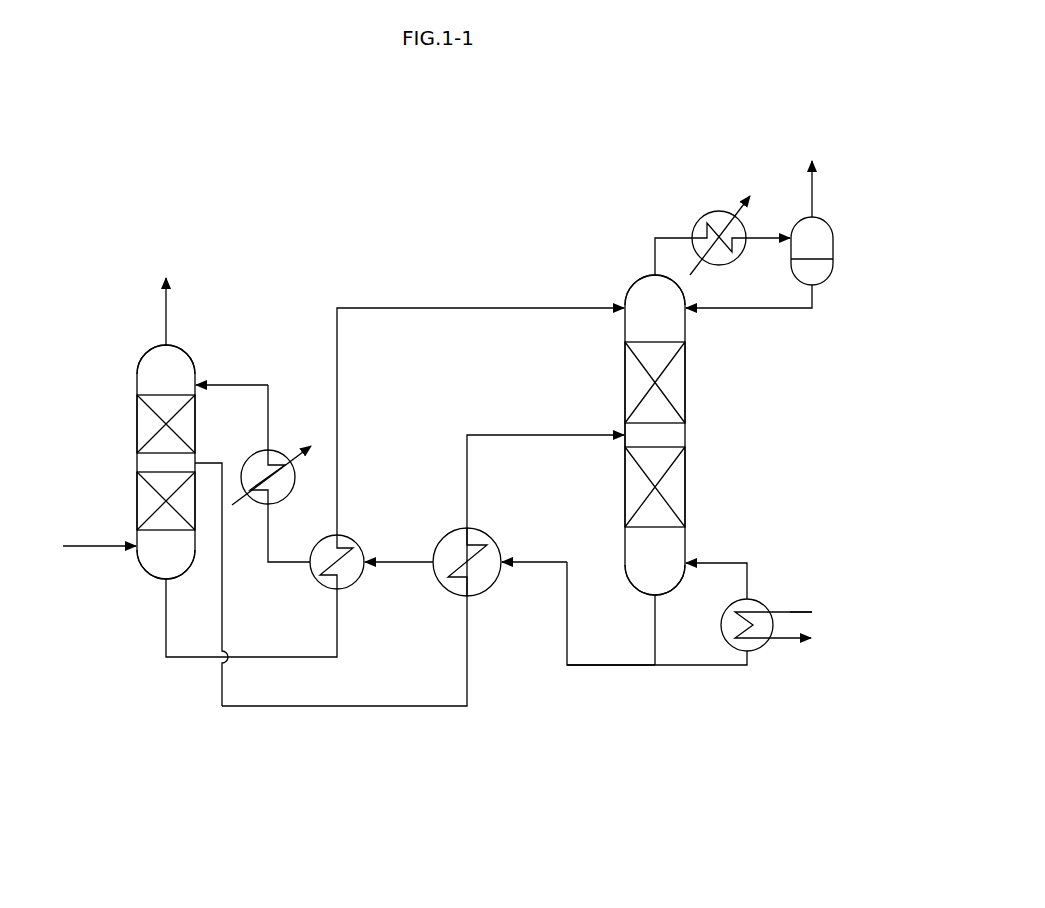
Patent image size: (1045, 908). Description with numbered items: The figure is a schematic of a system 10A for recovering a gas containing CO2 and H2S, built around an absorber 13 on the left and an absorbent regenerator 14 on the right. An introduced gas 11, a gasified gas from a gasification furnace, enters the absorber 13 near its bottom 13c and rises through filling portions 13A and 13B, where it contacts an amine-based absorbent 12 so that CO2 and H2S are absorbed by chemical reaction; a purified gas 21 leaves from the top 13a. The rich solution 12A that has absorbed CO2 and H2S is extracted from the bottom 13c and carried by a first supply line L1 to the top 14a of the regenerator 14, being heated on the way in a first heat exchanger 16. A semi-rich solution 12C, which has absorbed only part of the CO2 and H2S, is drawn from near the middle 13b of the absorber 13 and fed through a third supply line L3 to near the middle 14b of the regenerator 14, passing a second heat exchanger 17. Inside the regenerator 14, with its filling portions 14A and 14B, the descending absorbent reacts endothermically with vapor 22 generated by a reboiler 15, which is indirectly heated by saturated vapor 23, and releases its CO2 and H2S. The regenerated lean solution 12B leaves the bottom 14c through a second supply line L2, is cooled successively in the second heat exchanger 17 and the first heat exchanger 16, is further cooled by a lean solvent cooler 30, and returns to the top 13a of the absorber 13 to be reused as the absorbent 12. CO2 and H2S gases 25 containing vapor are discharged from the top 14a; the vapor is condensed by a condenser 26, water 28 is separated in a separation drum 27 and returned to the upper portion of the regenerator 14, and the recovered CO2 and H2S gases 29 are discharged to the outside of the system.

The system for recovering a gas containing CO2 and H2S 10A is at (470, 148).
The introduced gas 11 is at (107, 557).
The absorbent 12 is at (262, 373).
The rich solution 12A is at (206, 669).
The lean solution 12B is at (608, 678).
The semi-rich solution 12C is at (427, 720).
The absorber 13 is at (126, 352).
The top of the absorber 13a is at (192, 344).
The middle of the absorber 13b is at (199, 462).
The bottom of the absorber 13c is at (150, 580).
The filling portion 13A is at (143, 424).
The filling portion 13B is at (143, 500).
The absorbent regenerator 14 is at (722, 430).
The top of the absorbent regenerator 14a is at (632, 284).
The middle of the absorbent regenerator 14b is at (622, 430).
The bottom of the absorbent regenerator 14c is at (632, 596).
The filling portion 14A is at (678, 374).
The filling portion 14B is at (678, 474).
The reboiler 15 is at (756, 651).
The first heat exchanger 16 is at (340, 534).
The second heat exchanger 17 is at (472, 530).
The purified gas 21 is at (170, 300).
The vapor 22 is at (720, 561).
The saturated vapor 23 is at (798, 610).
The CO2 and H2S gases 25 is at (682, 226).
The condenser 26 is at (716, 212).
The separation drum 27 is at (836, 243).
The water 28 is at (796, 322).
The CO2 and H2S gases 29 is at (814, 175).
The lean solvent cooler 30 is at (276, 452).
The first supply line L1 is at (266, 656).
The second supply line L2 is at (566, 630).
The third supply line L3 is at (295, 708).